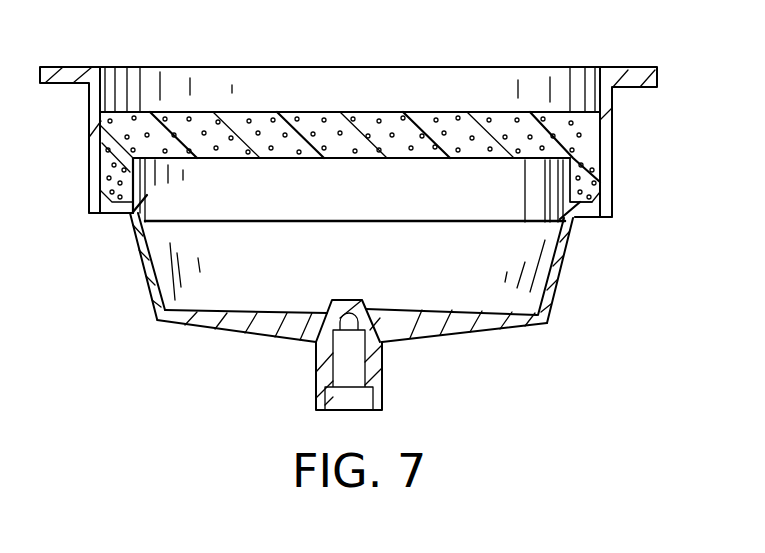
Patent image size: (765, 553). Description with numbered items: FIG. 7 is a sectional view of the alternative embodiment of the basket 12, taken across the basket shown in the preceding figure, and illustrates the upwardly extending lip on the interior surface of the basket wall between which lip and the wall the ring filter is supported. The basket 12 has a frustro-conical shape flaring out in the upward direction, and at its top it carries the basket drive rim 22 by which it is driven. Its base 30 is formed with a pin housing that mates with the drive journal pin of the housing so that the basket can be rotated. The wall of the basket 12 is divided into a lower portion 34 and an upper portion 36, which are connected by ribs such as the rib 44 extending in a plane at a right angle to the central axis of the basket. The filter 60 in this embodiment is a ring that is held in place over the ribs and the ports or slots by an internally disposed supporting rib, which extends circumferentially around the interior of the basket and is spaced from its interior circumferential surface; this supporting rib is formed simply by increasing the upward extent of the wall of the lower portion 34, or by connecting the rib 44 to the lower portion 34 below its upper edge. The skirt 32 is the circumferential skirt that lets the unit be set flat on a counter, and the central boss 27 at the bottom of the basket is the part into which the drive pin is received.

The basket 12 is at (335, 268).
The basket drive rim 22 is at (626, 68).
The central boss 27 is at (316, 386).
The base of basket 30 is at (147, 191).
The circumferential skirt 32 is at (117, 213).
The lower portion 34 is at (553, 291).
The upper portion 36 is at (608, 176).
The rib 44 is at (578, 220).
The filter 60 is at (432, 112).